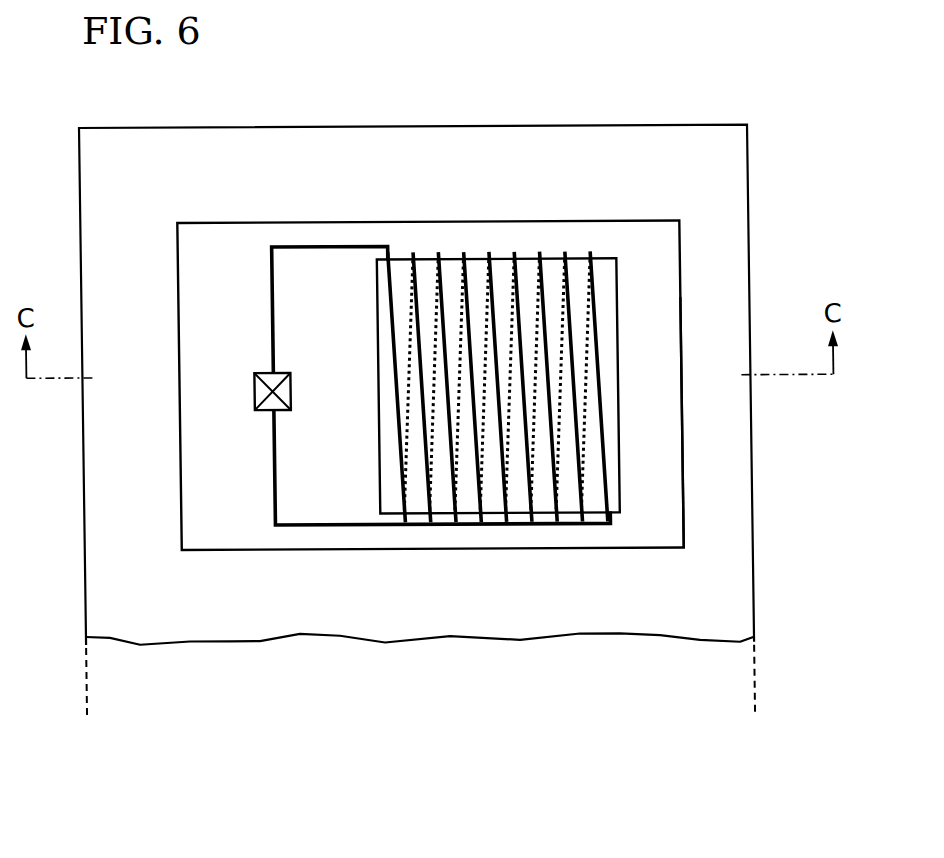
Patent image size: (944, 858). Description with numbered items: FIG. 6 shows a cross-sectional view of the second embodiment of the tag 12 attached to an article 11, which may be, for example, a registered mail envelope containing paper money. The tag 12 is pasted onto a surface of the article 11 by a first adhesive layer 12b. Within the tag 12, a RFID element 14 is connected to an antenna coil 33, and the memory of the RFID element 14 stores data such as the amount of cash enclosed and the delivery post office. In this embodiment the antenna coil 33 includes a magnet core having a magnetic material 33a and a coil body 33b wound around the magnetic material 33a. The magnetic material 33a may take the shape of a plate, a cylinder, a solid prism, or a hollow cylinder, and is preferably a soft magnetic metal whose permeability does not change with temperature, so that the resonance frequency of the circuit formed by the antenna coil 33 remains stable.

The article 11 is at (749, 174).
The tag 12 is at (682, 264).
The first adhesive layer 12b is at (678, 485).
The RFID element 14 is at (253, 411).
The antenna coil 33 is at (451, 681).
The magnetic material 33a is at (373, 497).
The coil body 33b is at (450, 507).